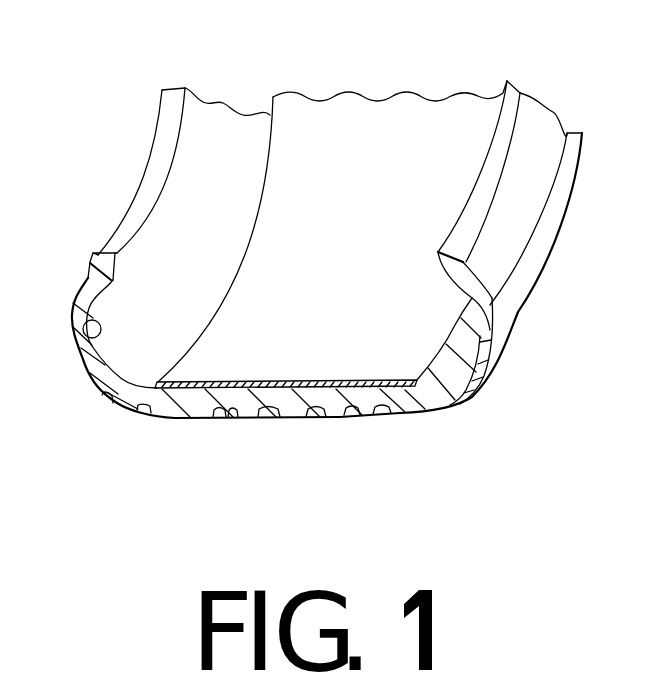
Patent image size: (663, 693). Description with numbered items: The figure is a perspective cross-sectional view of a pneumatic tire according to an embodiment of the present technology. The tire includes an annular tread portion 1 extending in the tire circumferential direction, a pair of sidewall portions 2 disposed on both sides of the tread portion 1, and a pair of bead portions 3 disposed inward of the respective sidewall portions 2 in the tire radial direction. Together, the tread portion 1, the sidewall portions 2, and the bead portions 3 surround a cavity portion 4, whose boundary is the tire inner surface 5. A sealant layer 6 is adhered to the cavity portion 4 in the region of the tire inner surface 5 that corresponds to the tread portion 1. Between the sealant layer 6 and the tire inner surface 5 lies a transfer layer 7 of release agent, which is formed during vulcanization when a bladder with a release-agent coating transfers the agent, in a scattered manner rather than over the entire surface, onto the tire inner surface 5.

The tread portion 1 is at (287, 422).
The sidewall portions 2 is at (72, 355).
The bead portions 3 is at (88, 275).
The cavity portion 4 is at (173, 240).
The tire inner surface 5 is at (84, 328).
The sealant layer 6 is at (410, 143).
The transfer layer 7 is at (243, 390).